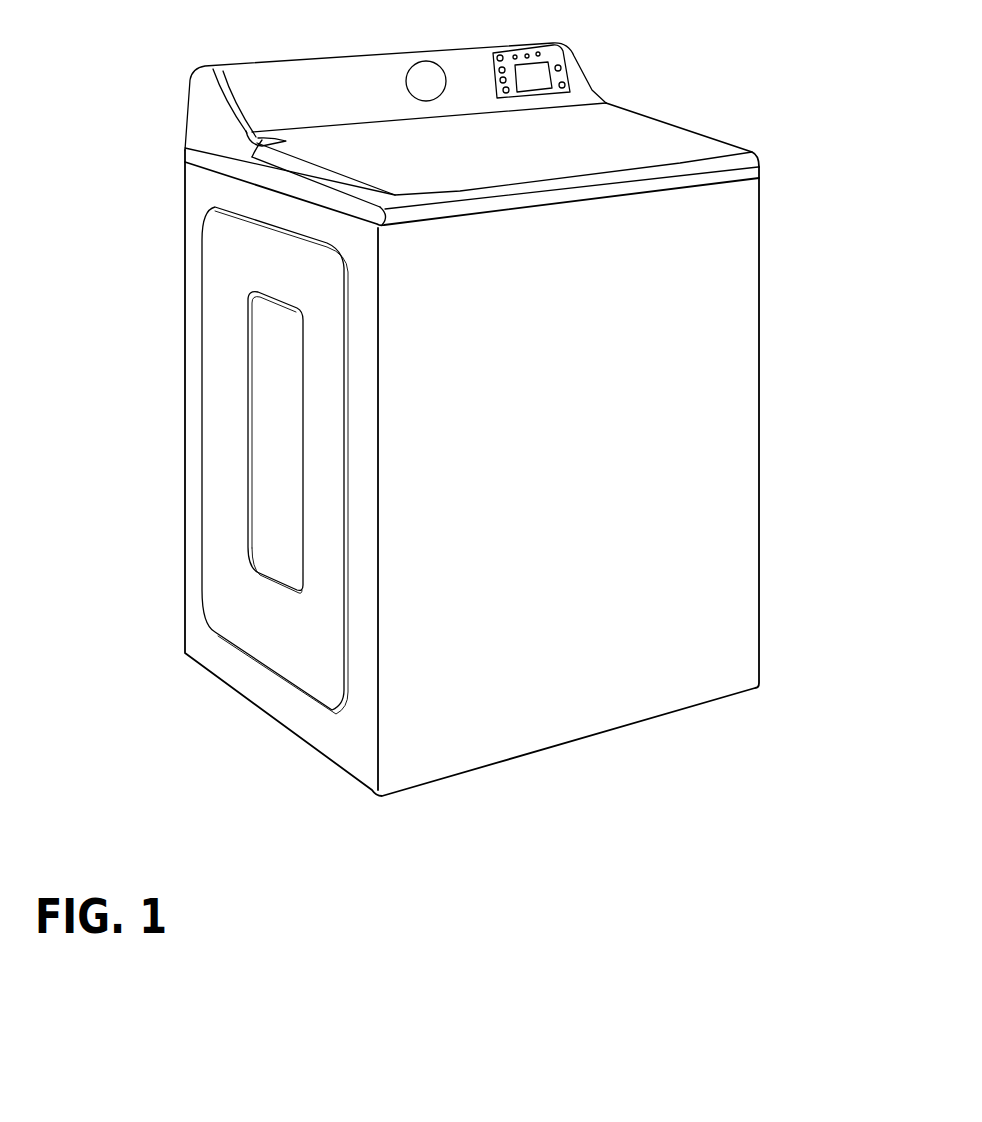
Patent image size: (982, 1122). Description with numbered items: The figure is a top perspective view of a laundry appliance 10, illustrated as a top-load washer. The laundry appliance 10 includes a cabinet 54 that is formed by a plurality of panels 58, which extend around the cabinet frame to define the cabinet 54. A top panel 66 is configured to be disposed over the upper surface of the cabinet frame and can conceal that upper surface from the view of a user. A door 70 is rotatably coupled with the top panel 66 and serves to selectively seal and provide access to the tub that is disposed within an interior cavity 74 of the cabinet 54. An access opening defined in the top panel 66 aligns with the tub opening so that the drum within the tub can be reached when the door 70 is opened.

The laundry appliance 10 is at (712, 58).
The cabinet 54 is at (733, 480).
The panels 58 is at (358, 716).
The top panel 66 is at (760, 174).
The door 70 is at (708, 128).
The interior cavity 74 is at (702, 377).